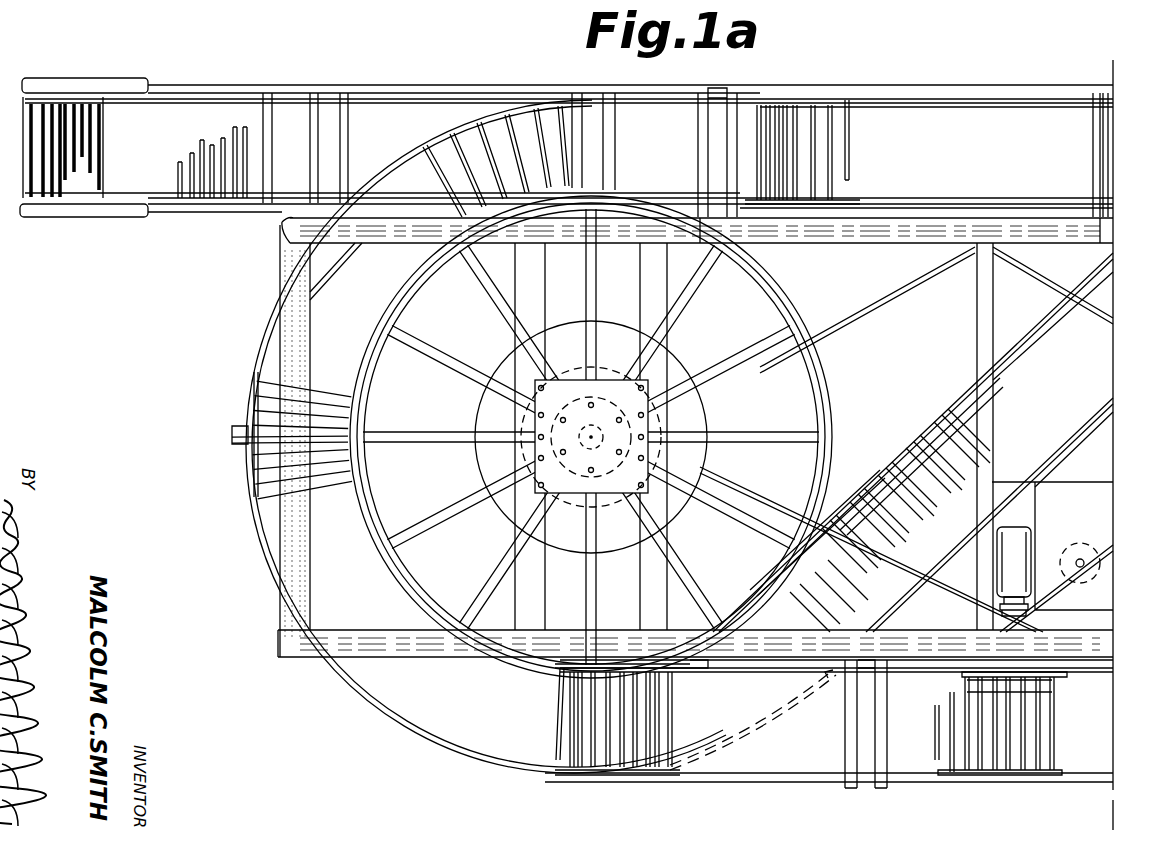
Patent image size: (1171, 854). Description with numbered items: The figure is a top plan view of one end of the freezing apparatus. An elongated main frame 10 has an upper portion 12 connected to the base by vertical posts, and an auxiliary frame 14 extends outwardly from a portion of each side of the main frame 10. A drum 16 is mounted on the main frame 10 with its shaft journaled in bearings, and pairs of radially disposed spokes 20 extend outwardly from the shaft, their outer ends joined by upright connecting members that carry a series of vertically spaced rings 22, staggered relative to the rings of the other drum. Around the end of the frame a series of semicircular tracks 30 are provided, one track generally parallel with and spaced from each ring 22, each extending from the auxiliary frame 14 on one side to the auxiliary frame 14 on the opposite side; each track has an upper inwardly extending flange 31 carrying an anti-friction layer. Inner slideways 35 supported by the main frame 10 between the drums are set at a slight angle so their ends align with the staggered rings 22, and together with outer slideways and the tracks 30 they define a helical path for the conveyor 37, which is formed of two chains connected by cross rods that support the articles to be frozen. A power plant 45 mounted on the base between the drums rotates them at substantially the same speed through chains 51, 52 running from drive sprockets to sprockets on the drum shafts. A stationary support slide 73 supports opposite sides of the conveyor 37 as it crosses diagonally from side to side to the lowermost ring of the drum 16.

The main frame 10 is at (278, 592).
The upper portion 12 is at (296, 290).
The auxiliary frame 14 is at (902, 74).
The drum 16 is at (438, 425).
The spokes 20 is at (719, 362).
The rings 22 is at (372, 323).
The semicircular tracks 30 is at (248, 357).
The upper inwardly extending flange 31 is at (422, 715).
The inner slideways 35 is at (888, 218).
The conveyor 37 is at (760, 100).
The power plant 45 is at (1030, 690).
The chain 51 is at (1094, 527).
The chain 52 is at (884, 422).
The stationary support slide 73 is at (1084, 421).